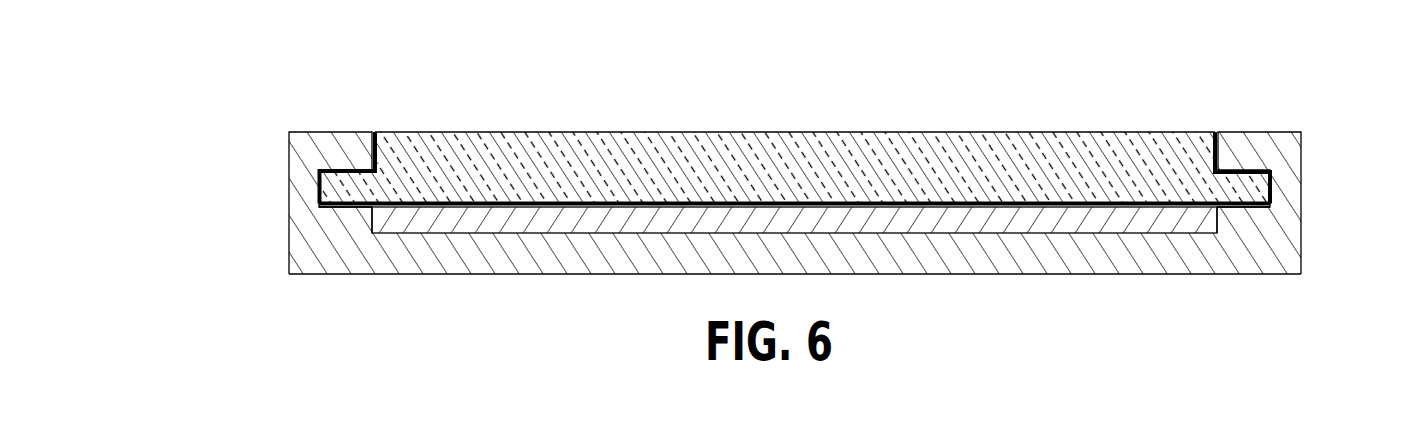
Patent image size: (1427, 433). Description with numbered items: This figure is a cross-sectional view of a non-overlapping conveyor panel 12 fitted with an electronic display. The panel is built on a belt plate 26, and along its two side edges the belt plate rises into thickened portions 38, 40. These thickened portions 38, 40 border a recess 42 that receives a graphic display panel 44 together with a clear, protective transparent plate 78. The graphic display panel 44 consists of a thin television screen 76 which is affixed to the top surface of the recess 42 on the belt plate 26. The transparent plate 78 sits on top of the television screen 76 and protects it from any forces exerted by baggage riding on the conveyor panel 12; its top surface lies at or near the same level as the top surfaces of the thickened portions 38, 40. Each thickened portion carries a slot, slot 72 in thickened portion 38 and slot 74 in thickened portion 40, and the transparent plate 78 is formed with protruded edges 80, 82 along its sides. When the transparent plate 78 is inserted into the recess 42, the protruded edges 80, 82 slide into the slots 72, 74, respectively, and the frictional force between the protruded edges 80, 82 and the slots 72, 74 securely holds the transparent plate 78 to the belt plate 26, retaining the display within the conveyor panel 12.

The non-overlapping conveyor panel 12 is at (1214, 96).
The belt plate 26 is at (1138, 276).
The thickened portion 38 is at (302, 150).
The thickened portion 40 is at (1292, 142).
The recess 42 is at (704, 229).
The graphic display panel 44 is at (550, 118).
The slot 72 is at (317, 188).
The slot 74 is at (1272, 183).
The television screen 76 is at (493, 223).
The transparent plate 78 is at (880, 147).
The protruded edge 80 is at (343, 192).
The protruded edge 82 is at (1247, 193).